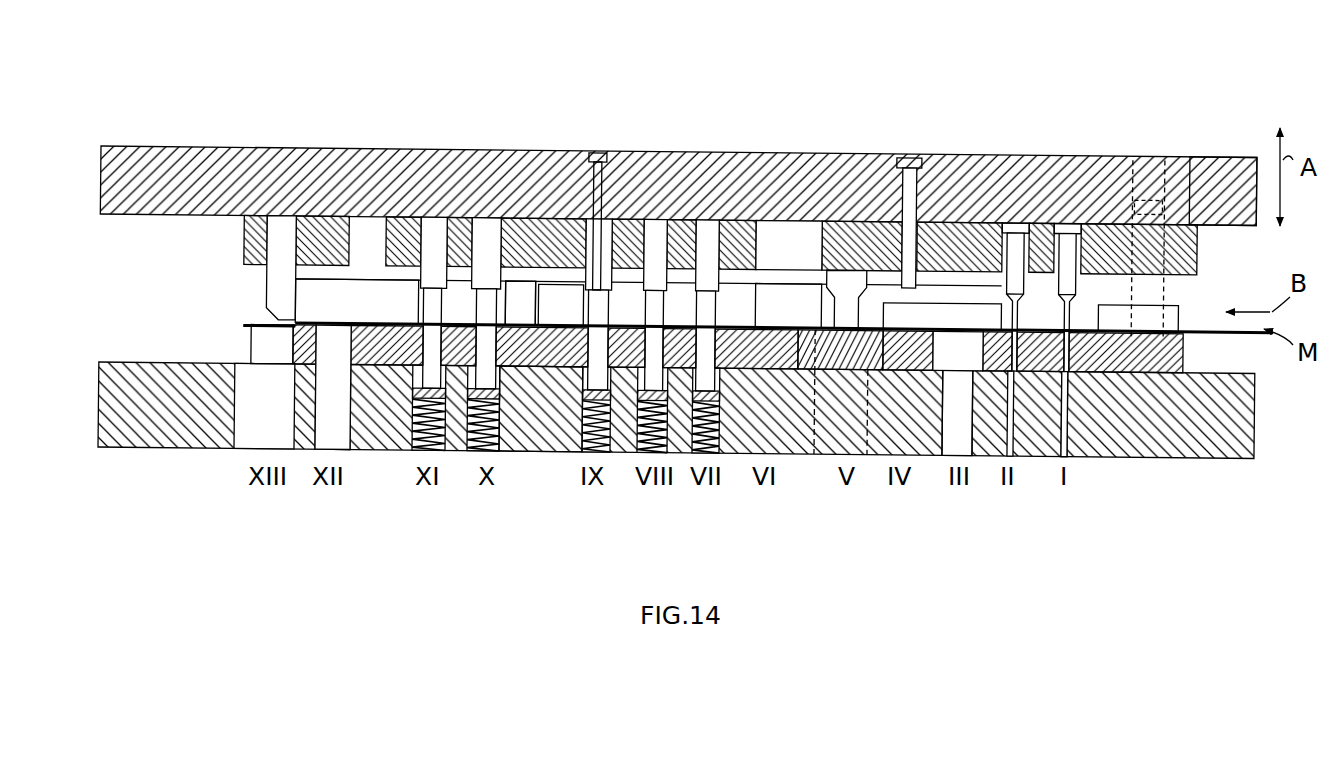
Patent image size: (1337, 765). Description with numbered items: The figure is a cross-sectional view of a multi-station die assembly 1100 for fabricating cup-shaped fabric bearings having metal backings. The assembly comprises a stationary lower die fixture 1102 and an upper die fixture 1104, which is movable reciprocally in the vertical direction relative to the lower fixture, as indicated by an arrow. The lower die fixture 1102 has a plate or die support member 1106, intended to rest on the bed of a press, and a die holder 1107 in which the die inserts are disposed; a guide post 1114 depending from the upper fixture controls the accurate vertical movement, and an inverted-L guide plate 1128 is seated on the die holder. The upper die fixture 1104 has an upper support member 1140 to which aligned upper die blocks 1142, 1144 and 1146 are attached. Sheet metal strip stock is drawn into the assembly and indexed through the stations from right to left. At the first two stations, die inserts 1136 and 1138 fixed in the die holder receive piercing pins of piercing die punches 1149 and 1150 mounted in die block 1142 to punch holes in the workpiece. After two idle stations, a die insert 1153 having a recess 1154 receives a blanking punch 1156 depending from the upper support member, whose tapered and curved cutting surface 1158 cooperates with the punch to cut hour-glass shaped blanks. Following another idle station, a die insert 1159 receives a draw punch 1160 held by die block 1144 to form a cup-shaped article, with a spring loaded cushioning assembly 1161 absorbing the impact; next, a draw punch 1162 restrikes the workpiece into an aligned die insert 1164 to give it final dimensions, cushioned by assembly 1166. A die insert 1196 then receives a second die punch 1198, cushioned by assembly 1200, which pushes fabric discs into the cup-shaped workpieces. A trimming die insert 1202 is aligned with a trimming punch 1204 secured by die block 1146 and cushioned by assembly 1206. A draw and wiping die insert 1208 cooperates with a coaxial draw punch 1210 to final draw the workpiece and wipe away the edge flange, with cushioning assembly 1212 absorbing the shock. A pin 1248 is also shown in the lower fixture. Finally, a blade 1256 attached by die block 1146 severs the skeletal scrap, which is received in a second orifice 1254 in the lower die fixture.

The multi-station die assembly 1100 is at (810, 128).
The lower die fixture 1102 is at (232, 520).
The upper die fixture 1104 is at (1232, 50).
The die support member 1106 is at (1232, 440).
The die holder 1107 is at (1176, 352).
The guide post 1114 is at (1148, 150).
The guide plate 1128 is at (1186, 300).
The die insert 1136 is at (1070, 380).
The die insert 1138 is at (965, 400).
The upper support member 1140 is at (1224, 165).
The upper die block 1142 is at (1268, 246).
The upper die block 1144 is at (612, 240).
The upper die block 1146 is at (330, 240).
The piercing die punch 1149 is at (1046, 270).
The piercing die punch 1150 is at (1006, 280).
The die insert 1153 is at (857, 300).
The recess 1154 is at (856, 352).
The blanking punch 1156 is at (793, 246).
The cutting surface 1158 is at (875, 235).
The die insert 1159 is at (752, 317).
The draw punch 1160 is at (717, 297).
The spring loaded cushioning assembly 1161 is at (820, 352).
The draw punch 1162 is at (667, 245).
The die insert 1164 is at (592, 450).
The spring loaded cushioning assembly 1166 is at (662, 400).
The die insert 1196 is at (510, 404).
The second die punch 1198 is at (572, 304).
The spring loaded cushioning assembly 1200 is at (520, 440).
The trimming die insert 1202 is at (508, 300).
The trimming punch 1204 is at (490, 245).
The spring loaded cushioning assembly 1206 is at (476, 405).
The draw and wiping die insert 1208 is at (420, 306).
The draw punch 1210 is at (440, 235).
The spring loaded cushioning assembly 1212 is at (426, 410).
The ejector pin 1248 is at (337, 430).
The second orifice 1254 is at (260, 435).
The blade 1256 is at (275, 282).